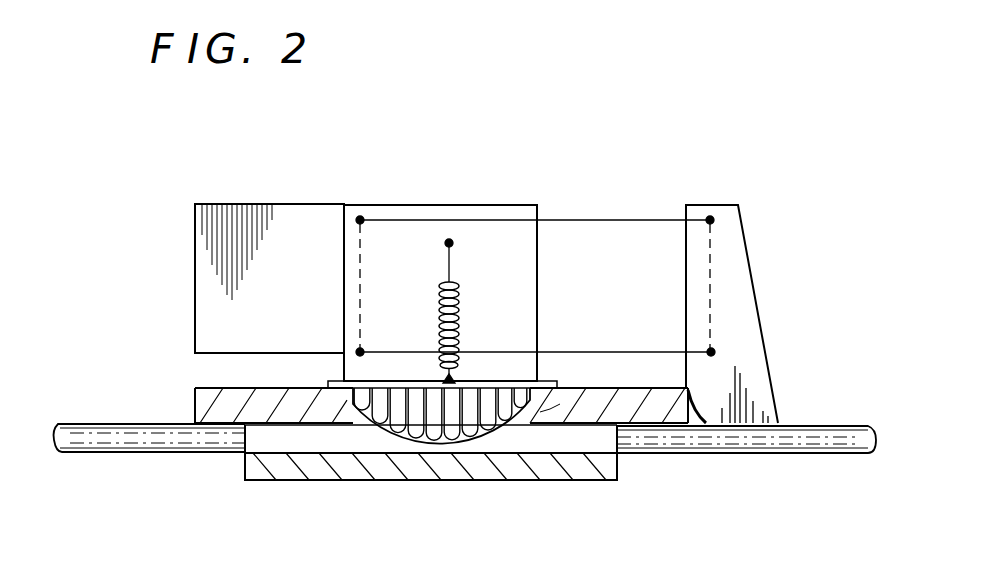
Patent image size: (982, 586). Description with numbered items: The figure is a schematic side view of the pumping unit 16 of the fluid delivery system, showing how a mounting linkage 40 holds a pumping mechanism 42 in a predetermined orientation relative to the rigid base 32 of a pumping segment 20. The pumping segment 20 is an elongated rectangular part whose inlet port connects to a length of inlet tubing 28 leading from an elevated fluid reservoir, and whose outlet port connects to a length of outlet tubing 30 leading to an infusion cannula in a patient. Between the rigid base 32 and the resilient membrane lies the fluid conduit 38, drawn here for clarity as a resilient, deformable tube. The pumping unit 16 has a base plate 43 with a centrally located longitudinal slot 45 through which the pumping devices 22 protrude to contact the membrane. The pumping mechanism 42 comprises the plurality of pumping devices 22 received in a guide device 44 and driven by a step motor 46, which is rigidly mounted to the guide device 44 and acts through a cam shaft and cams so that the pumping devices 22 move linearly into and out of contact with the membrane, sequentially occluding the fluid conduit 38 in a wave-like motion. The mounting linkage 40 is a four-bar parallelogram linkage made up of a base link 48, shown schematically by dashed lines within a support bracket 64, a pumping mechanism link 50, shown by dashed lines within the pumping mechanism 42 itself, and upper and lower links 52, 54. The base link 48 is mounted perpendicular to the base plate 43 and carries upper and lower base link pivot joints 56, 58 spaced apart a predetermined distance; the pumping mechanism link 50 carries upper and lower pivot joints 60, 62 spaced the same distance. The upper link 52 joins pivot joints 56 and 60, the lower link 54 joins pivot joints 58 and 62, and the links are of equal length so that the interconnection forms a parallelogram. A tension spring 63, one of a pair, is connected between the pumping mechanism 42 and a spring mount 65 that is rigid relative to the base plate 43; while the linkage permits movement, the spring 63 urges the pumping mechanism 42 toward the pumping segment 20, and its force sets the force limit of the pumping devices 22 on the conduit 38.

The pumping unit 16 is at (712, 202).
The pumping segment 20 is at (356, 484).
The pumping devices 22 is at (496, 433).
The inlet tubing 28 is at (722, 440).
The outlet tubing 30 is at (105, 437).
The rigid base 32 is at (490, 478).
The fluid conduit 38 is at (256, 440).
The mounting linkage 40 is at (570, 195).
The pumping mechanism 42 is at (279, 201).
The base plate 43 is at (195, 418).
The guide device 44 is at (412, 204).
The longitudinal slot 45 is at (560, 408).
The step motor 46 is at (195, 250).
The base link 48 is at (714, 300).
The pumping mechanism link 50 is at (342, 268).
The upper link 52 is at (588, 226).
The lower link 54 is at (572, 342).
The upper base link pivot joint 56 is at (714, 220).
The lower base link pivot joint 58 is at (715, 352).
The pumping mechanism upper pivot joint 60 is at (360, 216).
The pumping mechanism lower pivot joint 62 is at (356, 349).
The tension spring 63 is at (440, 285).
The support bracket 64 is at (757, 395).
The spring mount 65 is at (478, 380).